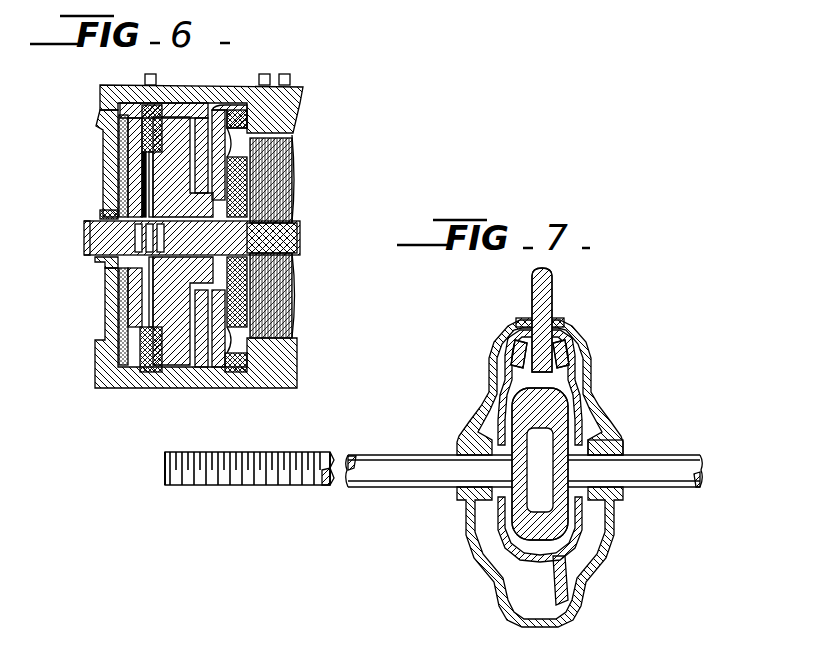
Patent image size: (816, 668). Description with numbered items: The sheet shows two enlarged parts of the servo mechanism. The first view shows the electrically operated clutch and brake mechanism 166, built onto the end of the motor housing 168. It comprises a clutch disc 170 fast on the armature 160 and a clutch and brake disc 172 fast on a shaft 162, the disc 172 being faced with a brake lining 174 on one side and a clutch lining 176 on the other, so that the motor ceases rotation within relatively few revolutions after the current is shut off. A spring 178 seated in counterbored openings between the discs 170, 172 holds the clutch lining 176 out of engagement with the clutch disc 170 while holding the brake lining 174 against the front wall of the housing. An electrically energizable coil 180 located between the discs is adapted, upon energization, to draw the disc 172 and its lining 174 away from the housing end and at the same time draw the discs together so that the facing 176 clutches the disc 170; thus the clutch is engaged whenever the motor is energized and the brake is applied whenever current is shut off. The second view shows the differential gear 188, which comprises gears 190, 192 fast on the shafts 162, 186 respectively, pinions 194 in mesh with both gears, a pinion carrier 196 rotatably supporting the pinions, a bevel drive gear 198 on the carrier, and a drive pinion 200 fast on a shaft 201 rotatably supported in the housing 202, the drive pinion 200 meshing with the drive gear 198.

In FIG. 6, the armature 160 is at (297, 162).
In FIG. 6, the shaft 162 is at (84, 238).
In FIG. 7, the shaft 162 is at (665, 488).
In FIG. 6, the clutch and brake mechanism 166 is at (228, 82).
In FIG. 6, the motor housing 168 is at (202, 72).
In FIG. 6, the clutch disc 170 is at (195, 370).
In FIG. 6, the clutch and brake disc 172 is at (130, 370).
In FIG. 6, the brake lining 174 is at (112, 300).
In FIG. 6, the clutch lining 176 is at (105, 266).
In FIG. 6, the spring 178 is at (102, 211).
In FIG. 6, the coil 180 is at (148, 370).
In FIG. 7, the shaft 186 is at (380, 488).
In FIG. 7, the differential gear 188 is at (460, 392).
In FIG. 7, the gear 190 is at (620, 446).
In FIG. 7, the gear 192 is at (500, 447).
In FIG. 7, the pinions 194 is at (539, 470).
In FIG. 7, the pinion carrier 196 is at (492, 551).
In FIG. 7, the bevel drive gear 198 is at (572, 372).
In FIG. 7, the drive pinion 200 is at (512, 350).
In FIG. 7, the shaft 201 is at (556, 302).
In FIG. 7, the housing 202 is at (590, 345).